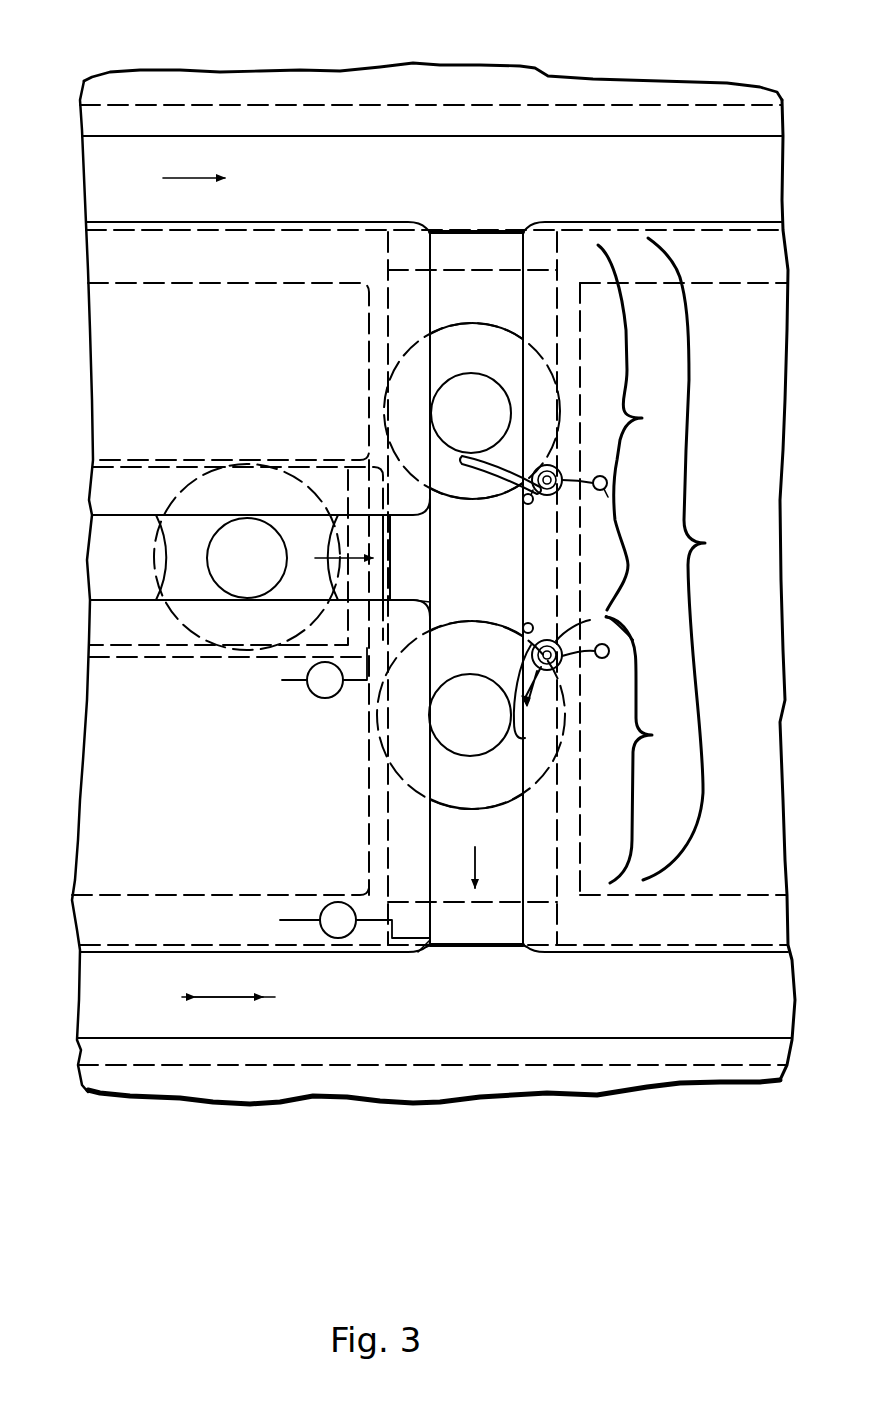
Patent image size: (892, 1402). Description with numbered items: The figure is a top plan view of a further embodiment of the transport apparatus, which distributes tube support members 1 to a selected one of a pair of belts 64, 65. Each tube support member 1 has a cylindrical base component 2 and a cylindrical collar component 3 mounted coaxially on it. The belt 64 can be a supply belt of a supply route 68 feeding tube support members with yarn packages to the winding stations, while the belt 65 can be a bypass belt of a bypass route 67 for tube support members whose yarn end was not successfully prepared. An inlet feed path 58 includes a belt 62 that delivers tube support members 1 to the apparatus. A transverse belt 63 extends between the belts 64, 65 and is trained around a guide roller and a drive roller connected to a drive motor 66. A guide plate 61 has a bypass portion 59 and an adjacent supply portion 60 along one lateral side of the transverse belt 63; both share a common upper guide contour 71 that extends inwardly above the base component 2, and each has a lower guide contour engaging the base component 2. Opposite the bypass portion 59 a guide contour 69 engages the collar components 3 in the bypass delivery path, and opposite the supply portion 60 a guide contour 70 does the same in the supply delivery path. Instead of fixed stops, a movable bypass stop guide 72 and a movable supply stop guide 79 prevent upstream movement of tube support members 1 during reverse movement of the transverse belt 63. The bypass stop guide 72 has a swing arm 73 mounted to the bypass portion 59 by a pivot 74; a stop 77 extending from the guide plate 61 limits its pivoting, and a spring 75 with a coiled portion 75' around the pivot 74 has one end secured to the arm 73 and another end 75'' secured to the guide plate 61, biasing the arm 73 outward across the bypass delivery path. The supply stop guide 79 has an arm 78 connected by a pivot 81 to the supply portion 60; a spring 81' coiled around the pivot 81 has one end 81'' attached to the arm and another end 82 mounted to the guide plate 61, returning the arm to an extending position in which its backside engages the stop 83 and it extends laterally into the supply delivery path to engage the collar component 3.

The tube support member 1 is at (484, 617).
The cylindrical base component 2 is at (478, 337).
The cylindrical collar component 3 is at (476, 395).
The inlet feed path 58 is at (255, 452).
The bypass portion 59 is at (634, 427).
The supply portion 60 is at (644, 750).
The guide plate 61 is at (690, 559).
The belt 62 is at (144, 573).
The transverse belt 63 is at (464, 573).
The belt 64 is at (506, 1010).
The belt 65 is at (481, 195).
The drive motor 66 is at (338, 902).
The bypass route 67 is at (556, 62).
The supply route 68 is at (367, 1104).
The guide contour 69 is at (431, 305).
The guide contour 70 is at (430, 843).
The common upper guide contour 71 is at (523, 830).
The movable bypass stop guide 72 is at (509, 446).
The swing arm 73 is at (476, 478).
The pivot 74 is at (562, 472).
The spring 75 is at (589, 447).
The coiled portion 75' is at (539, 434).
The spring end 75'' is at (608, 503).
The stop 77 is at (524, 503).
The arm 78 is at (530, 706).
The movable supply stop guide 79 is at (515, 742).
The pivot 81 is at (587, 605).
The spring 81' is at (597, 682).
The spring end 81'' is at (640, 617).
The spring end 82 is at (610, 650).
The stop 83 is at (530, 622).